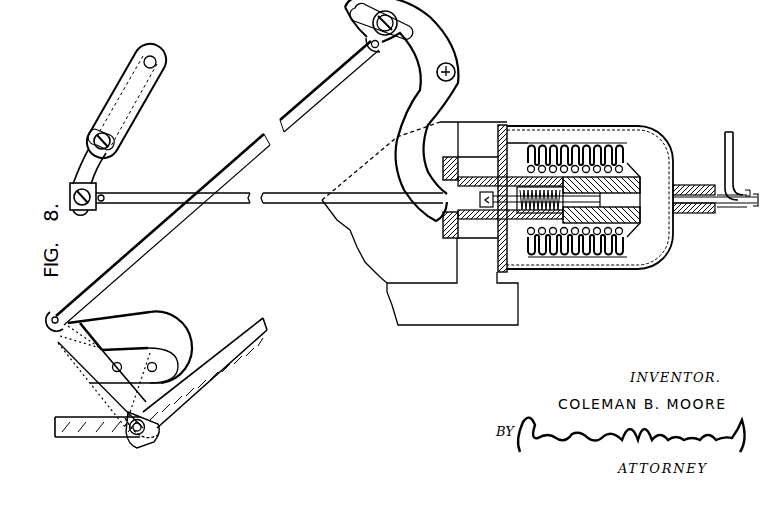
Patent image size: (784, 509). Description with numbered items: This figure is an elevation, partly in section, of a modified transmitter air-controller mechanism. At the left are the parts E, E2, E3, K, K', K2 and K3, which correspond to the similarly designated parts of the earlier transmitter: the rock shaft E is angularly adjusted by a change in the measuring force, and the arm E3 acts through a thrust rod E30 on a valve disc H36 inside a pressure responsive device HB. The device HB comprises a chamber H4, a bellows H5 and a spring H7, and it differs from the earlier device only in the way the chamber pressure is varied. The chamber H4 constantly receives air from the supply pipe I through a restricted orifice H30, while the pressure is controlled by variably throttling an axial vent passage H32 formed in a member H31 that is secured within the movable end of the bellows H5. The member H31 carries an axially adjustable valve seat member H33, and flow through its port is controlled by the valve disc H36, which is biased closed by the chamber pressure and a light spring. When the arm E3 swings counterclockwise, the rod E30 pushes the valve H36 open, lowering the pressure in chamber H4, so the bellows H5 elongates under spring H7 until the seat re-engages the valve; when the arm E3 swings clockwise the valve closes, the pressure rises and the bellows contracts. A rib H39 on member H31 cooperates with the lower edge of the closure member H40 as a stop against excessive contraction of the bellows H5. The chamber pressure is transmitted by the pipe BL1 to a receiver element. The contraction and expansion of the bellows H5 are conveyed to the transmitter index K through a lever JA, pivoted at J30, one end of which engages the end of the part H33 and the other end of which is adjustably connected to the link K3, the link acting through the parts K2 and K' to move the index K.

The shaft E is at (151, 55).
The part E2 is at (94, 119).
The arm E3 is at (76, 177).
The thrust rod E30 is at (174, 193).
The transmitter index K is at (161, 377).
The part K' is at (146, 436).
The part K2 is at (158, 320).
The link K3 is at (158, 238).
The lever JA is at (418, 112).
The pivot J30 is at (446, 63).
The closure member H40 is at (499, 131).
The valve disc H36 is at (519, 204).
The spring H7 is at (527, 165).
The bellows H5 is at (548, 148).
The chamber H4 is at (572, 137).
The pressure responsive device HB is at (594, 128).
The valve seat member H33 is at (516, 217).
The rib H39 is at (542, 226).
The member H31 is at (628, 203).
The axial vent passage H32 is at (632, 211).
The pipe BL1 is at (725, 161).
The supply pipe I is at (748, 190).
The restricted orifice H30 is at (737, 205).